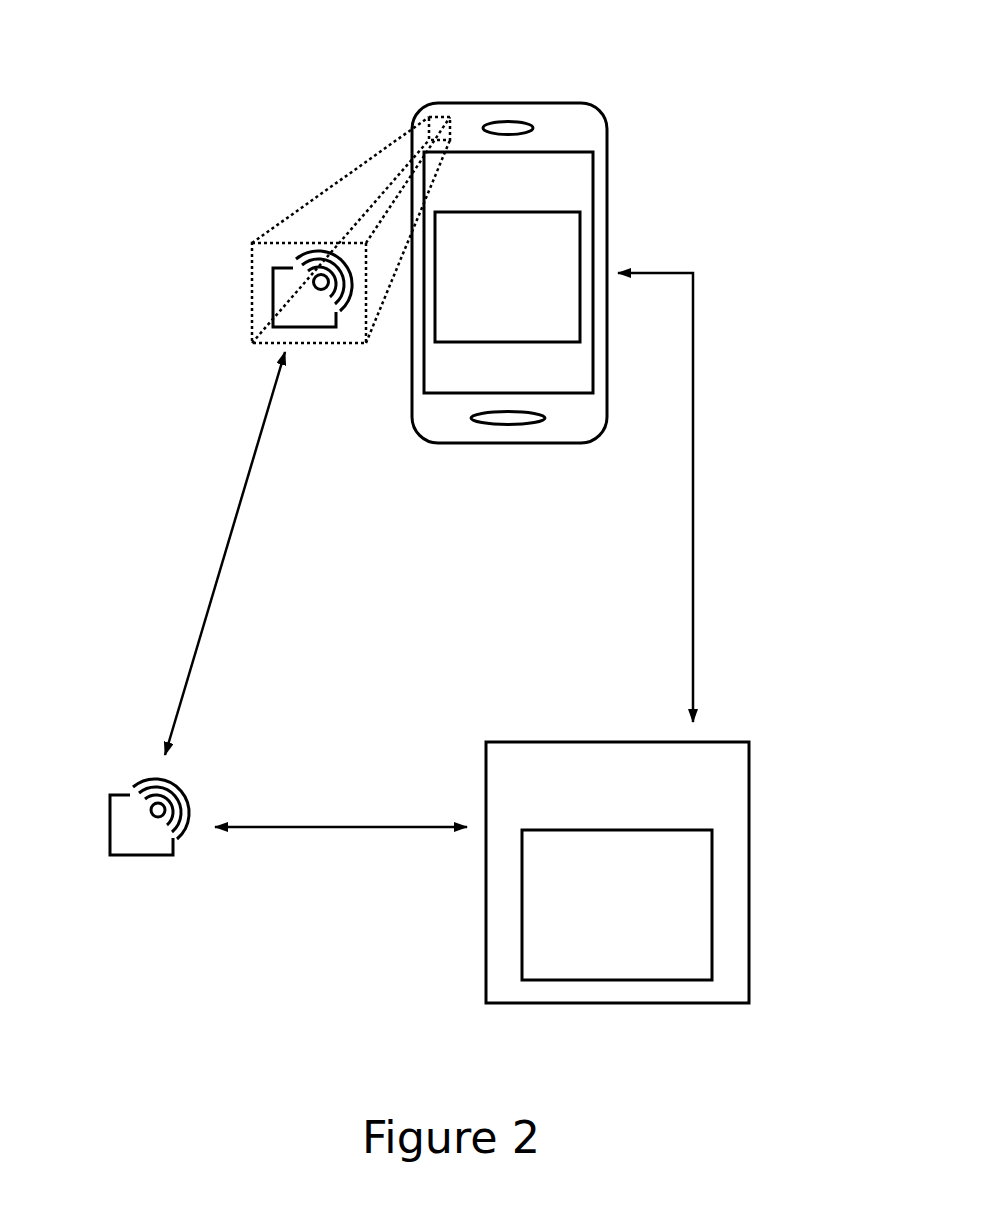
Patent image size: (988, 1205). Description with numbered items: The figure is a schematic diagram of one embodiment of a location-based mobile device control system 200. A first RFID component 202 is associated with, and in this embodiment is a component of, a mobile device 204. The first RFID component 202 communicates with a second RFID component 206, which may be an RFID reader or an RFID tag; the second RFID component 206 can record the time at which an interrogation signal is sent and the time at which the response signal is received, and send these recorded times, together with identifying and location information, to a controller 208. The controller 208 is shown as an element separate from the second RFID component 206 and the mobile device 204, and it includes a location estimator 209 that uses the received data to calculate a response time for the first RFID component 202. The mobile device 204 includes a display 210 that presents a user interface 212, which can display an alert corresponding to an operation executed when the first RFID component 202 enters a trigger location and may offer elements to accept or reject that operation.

The location-based mobile device control system 200 is at (143, 48).
The first radio frequency identifier (RFID) component 202 is at (272, 304).
The mobile device 204 is at (455, 102).
The second RFID component 206 is at (110, 810).
The controller 208 is at (486, 752).
The location estimator 209 is at (712, 870).
The display 210 is at (607, 176).
The user interface 212 is at (506, 211).